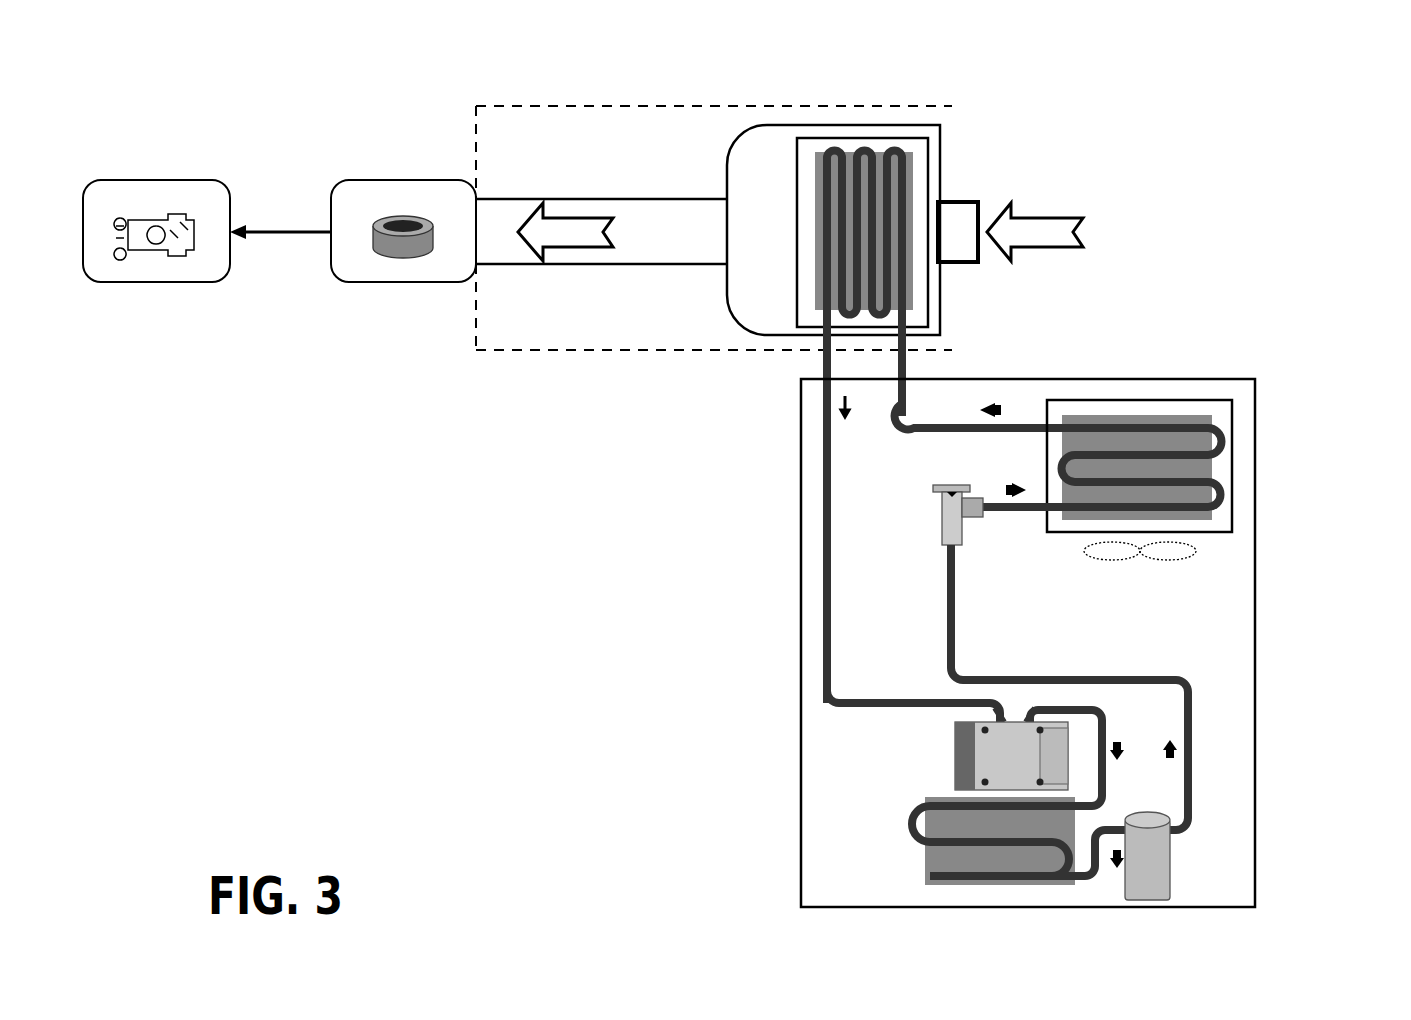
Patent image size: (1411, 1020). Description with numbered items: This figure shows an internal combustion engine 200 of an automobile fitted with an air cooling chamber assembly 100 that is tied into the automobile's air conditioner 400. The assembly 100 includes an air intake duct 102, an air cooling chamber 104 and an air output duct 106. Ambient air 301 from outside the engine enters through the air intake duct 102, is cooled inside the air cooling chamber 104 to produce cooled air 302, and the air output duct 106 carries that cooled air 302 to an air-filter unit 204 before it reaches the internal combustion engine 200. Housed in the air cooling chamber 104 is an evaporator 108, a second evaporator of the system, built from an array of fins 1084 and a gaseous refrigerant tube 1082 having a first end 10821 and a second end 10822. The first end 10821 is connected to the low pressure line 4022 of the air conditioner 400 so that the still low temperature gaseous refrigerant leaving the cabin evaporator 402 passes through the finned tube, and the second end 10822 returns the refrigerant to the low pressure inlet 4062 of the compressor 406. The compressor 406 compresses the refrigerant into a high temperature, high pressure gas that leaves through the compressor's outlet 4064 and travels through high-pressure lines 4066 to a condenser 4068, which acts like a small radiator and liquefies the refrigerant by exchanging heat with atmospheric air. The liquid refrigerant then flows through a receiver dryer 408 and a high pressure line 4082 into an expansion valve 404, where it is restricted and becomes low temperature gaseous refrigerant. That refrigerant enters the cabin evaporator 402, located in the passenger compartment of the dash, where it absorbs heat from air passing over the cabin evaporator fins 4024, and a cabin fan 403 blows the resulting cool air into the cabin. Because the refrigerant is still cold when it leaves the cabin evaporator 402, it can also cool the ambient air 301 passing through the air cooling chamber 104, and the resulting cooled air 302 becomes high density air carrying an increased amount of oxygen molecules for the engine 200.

The air cooling chamber assembly 100 is at (476, 352).
The air intake duct 102 is at (963, 202).
The air cooling chamber 104 is at (905, 132).
The air output duct 106 is at (664, 199).
The evaporator 108 is at (866, 148).
The gaseous refrigerant tube 1082 is at (830, 148).
The array of fins 1084 is at (813, 170).
The first end 10821 is at (900, 340).
The second end 10822 is at (826, 339).
The internal combustion engine 200 is at (163, 180).
The air-filter unit 204 is at (406, 180).
The ambient air 301 is at (1046, 218).
The cooled air 302 is at (541, 206).
The air conditioner 400 is at (800, 601).
The cabin evaporator 402 is at (1233, 476).
The low pressure line 4022 is at (937, 423).
The cabin evaporator fins 4024 is at (1208, 420).
The cabin fan 403 is at (1190, 551).
The expansion valve 404 is at (940, 516).
The compressor 406 is at (953, 757).
The low pressure inlet 4062 is at (996, 714).
The compressor's outlet 4064 is at (1003, 715).
The high-pressure lines 4066 is at (1103, 783).
The condenser 4068 is at (913, 840).
The receiver dryer 408 is at (1172, 872).
The high pressure line 4082 is at (1190, 689).